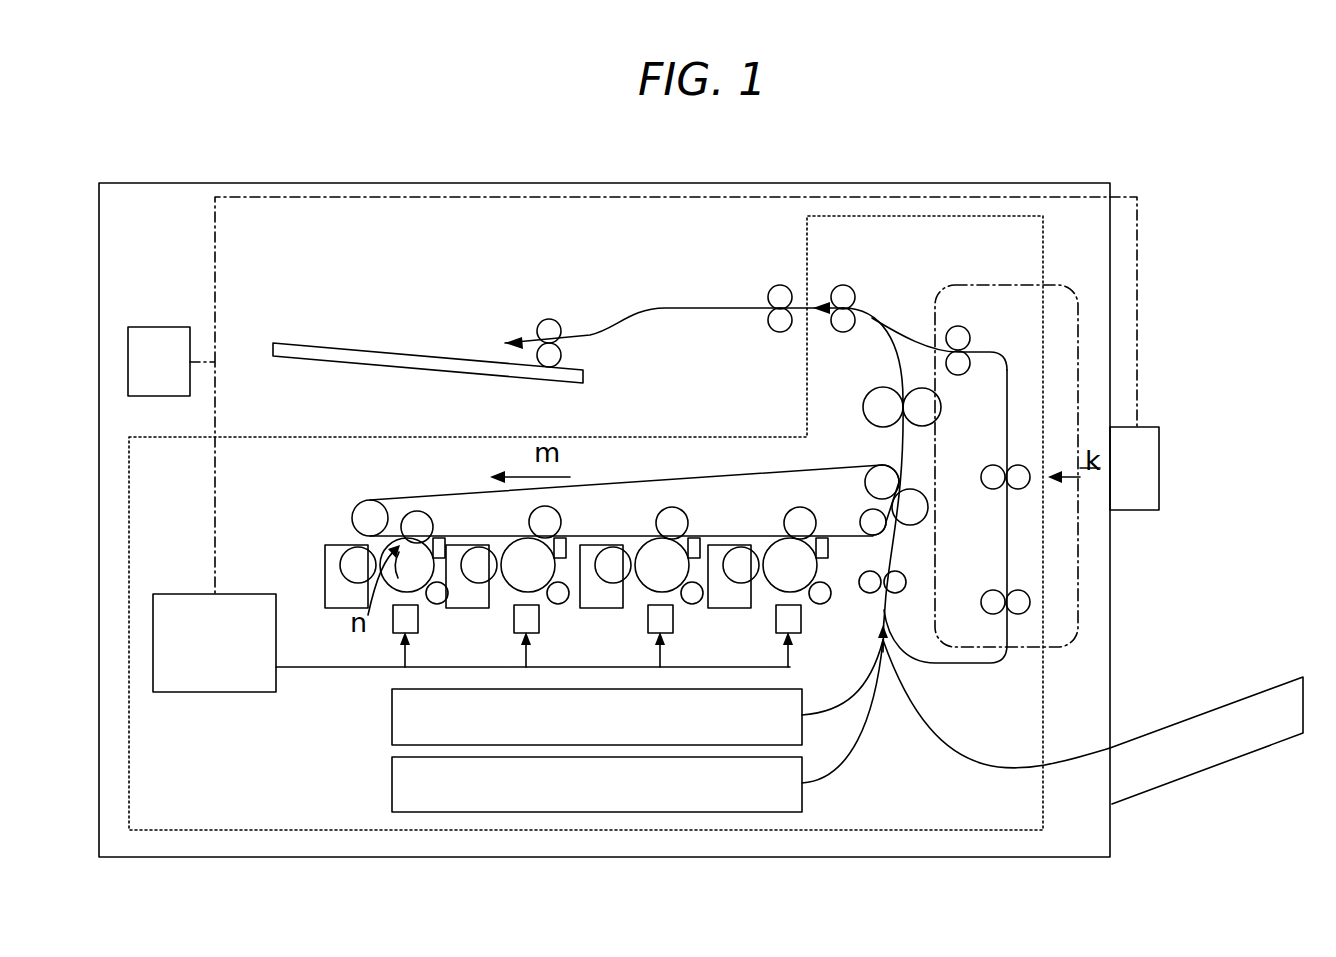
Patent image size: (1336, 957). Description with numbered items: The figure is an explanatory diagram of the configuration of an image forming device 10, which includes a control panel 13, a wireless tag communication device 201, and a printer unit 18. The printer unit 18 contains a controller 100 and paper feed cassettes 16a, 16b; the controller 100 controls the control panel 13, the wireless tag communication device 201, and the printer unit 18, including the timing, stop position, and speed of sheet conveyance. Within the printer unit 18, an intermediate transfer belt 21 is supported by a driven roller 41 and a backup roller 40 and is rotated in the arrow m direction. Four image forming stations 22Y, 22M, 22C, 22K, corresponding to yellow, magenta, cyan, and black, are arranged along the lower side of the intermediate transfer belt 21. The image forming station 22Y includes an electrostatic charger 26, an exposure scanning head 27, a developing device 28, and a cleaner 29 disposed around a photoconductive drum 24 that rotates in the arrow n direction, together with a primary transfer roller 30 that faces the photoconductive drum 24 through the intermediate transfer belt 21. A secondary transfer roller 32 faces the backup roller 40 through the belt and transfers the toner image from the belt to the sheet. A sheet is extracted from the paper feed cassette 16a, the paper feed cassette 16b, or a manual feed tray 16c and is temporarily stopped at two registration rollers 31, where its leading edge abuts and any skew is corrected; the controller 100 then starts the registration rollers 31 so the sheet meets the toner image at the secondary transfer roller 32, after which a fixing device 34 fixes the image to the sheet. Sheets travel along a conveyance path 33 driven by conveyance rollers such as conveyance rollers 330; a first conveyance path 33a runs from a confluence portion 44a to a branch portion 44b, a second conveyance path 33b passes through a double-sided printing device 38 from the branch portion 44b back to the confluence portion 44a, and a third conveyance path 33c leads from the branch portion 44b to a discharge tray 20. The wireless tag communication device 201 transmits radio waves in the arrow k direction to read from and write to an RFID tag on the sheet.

The image forming device 10 is at (257, 169).
The control panel 13 is at (160, 327).
The printer unit 18 is at (167, 437).
The discharge tray 20 is at (400, 352).
The intermediate transfer belt 21 is at (678, 480).
The photoconductive drum 24 is at (385, 548).
The electrostatic charger 26 is at (447, 602).
The exposure scanning head 27 is at (393, 622).
The developing device 28 is at (325, 565).
The cleaner 29 is at (440, 538).
The primary transfer roller 30 is at (416, 511).
The registration rollers 31 is at (906, 582).
The secondary transfer roller 32 is at (910, 526).
The conveyance path 33 is at (942, 667).
The first conveyance path 33a is at (900, 447).
The second conveyance path 33b is at (915, 338).
The third conveyance path 33c is at (800, 300).
The fixing device 34 is at (896, 388).
The double-sided printing device 38 is at (1052, 285).
The backup roller 40 is at (865, 485).
The driven roller 41 is at (358, 504).
The confluence portion 44a is at (892, 640).
The branch portion 44b is at (880, 317).
The controller 100 is at (211, 693).
The paper feed cassette 16a is at (392, 712).
The paper feed cassette 16b is at (392, 783).
The manual feed tray 16c is at (1185, 720).
The wireless tag communication device 201 is at (1142, 427).
The image forming station 22Y is at (423, 604).
The image forming station 22M is at (550, 604).
The image forming station 22C is at (677, 604).
The image forming station 22K is at (771, 604).
The conveyance rollers 330 is at (985, 488).